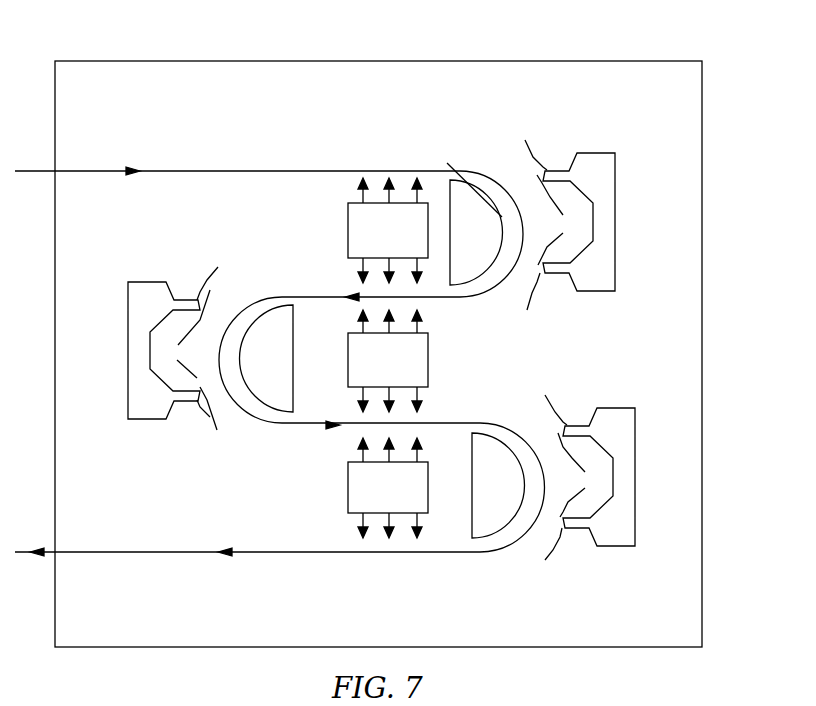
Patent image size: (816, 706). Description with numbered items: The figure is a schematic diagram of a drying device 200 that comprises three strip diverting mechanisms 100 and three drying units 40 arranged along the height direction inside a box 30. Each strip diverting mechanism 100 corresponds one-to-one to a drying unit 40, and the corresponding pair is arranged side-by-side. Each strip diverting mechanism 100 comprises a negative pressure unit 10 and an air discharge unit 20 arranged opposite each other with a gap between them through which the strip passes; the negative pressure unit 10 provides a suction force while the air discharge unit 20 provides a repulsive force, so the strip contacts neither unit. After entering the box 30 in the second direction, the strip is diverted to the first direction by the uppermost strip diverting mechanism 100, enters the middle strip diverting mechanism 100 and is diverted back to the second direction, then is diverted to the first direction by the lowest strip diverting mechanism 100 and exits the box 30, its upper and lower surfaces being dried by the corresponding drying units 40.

The drying device 200 is at (417, 31).
The box 30 is at (702, 300).
The air discharge unit 20 is at (447, 164).
The drying unit 40 is at (349, 250).
The negative pressure unit 10 is at (595, 292).
The strip diverting mechanism 100 is at (513, 150).